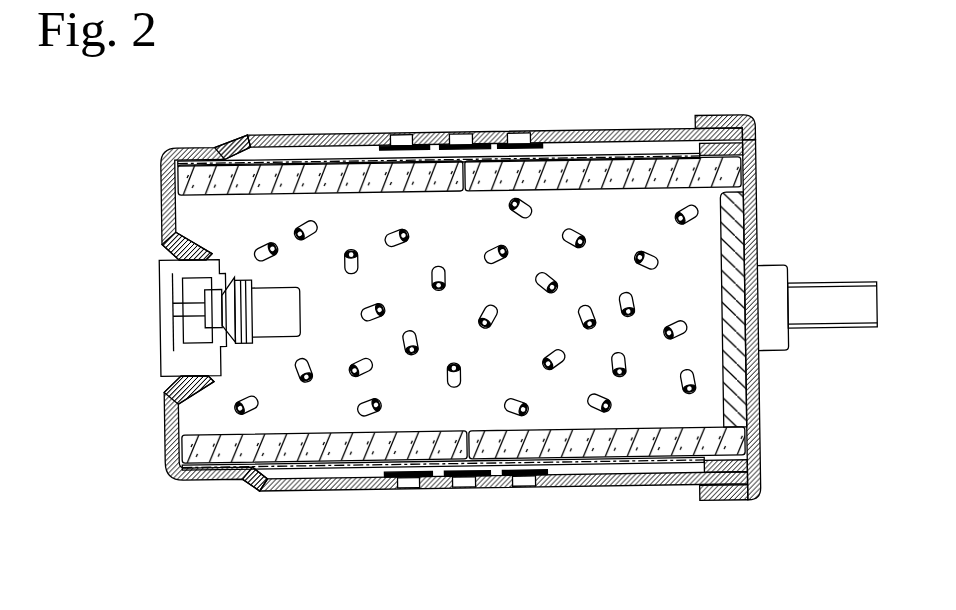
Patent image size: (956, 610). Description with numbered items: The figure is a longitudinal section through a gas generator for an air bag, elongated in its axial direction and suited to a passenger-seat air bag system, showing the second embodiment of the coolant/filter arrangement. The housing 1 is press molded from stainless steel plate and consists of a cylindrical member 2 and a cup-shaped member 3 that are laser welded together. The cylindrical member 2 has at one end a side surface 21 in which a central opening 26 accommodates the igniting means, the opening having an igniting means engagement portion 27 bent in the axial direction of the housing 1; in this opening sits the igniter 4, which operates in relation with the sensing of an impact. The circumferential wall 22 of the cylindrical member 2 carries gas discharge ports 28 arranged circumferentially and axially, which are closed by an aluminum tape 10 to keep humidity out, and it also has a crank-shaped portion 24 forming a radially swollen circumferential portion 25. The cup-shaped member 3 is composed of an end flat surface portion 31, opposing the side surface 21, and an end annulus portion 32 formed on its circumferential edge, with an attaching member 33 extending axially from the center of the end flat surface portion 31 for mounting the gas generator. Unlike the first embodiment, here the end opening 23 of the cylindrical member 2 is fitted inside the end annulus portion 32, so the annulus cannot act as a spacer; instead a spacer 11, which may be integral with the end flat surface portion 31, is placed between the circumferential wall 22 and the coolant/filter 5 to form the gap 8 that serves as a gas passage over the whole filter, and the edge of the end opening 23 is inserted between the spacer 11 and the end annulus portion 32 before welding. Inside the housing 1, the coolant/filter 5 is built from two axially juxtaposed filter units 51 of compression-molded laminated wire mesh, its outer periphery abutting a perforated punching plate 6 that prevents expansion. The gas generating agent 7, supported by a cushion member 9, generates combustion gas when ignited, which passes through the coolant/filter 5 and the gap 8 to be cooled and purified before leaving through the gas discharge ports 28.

The housing 1 is at (805, 541).
The cylindrical member 2 is at (637, 489).
The cup-shaped member 3 is at (763, 478).
The igniter 4 is at (275, 328).
The coolant/filter 5 is at (489, 566).
The punching plate 6 is at (604, 462).
The gas generating agent 7 is at (310, 374).
The gap 8 is at (565, 150).
The cushion member 9 is at (758, 413).
The aluminum tape 10 is at (527, 472).
The spacer 11 is at (762, 176).
The side surface 21 is at (165, 418).
The circumferential wall 22 is at (270, 496).
The end opening 23 is at (755, 112).
The crank-shaped portion 24 is at (240, 147).
The swollen circumferential portion 25 is at (345, 133).
The central opening 26 is at (167, 258).
The igniting means engagement portion 27 is at (163, 238).
The gas discharge ports 28 is at (463, 130).
The end flat surface portion 31 is at (760, 240).
The end annulus portion 32 is at (720, 115).
The attaching member 33 is at (806, 327).
The filter units 51 is at (382, 479).